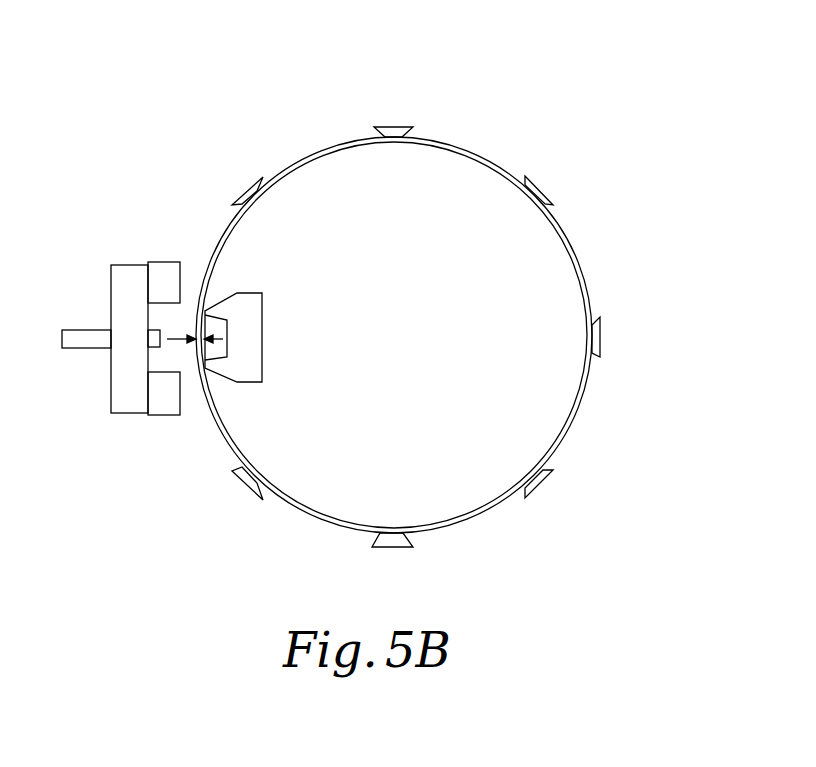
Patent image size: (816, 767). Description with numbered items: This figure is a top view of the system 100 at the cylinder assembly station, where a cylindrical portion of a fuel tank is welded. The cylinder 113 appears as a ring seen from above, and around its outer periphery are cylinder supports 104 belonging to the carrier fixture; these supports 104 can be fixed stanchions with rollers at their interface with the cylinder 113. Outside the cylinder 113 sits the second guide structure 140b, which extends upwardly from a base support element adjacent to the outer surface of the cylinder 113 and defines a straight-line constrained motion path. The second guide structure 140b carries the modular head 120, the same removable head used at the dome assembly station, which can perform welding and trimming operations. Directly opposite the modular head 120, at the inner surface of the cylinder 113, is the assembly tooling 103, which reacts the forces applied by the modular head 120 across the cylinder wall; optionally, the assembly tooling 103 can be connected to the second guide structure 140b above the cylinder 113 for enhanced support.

The system 100 is at (447, 326).
The cylinder 113 is at (583, 275).
The cylinder supports 104 is at (601, 345).
The assembly tooling 103 is at (262, 357).
The modular head 120 is at (120, 325).
The second guide structure 140b is at (107, 401).